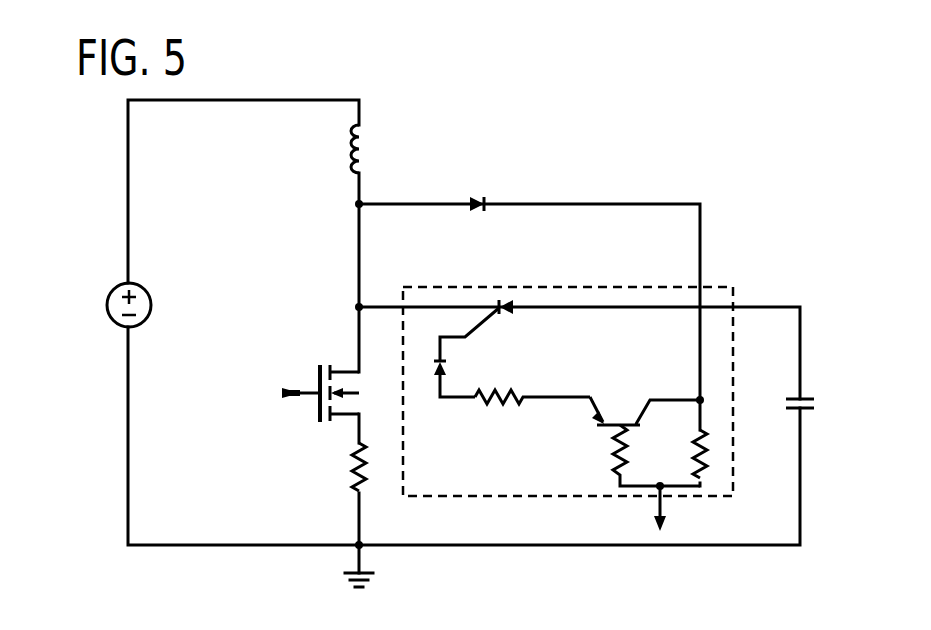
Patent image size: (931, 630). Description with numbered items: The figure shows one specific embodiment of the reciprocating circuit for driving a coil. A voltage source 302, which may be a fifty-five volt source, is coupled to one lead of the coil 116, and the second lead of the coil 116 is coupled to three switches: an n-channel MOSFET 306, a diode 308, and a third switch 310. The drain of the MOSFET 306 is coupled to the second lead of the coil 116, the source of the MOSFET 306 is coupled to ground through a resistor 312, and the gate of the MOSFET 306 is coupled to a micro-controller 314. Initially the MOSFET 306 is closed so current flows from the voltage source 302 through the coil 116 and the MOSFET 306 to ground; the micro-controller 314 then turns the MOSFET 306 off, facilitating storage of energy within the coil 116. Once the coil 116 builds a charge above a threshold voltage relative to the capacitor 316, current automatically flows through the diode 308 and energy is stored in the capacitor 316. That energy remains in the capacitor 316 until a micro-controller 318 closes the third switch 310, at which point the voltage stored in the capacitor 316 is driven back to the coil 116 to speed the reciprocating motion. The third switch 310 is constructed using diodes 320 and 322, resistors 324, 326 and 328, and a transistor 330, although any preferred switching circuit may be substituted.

The coil 116 is at (352, 146).
The voltage source 302 is at (114, 290).
The n-channel MOSFET 306 is at (320, 412).
The diode 308 is at (472, 199).
The third switch 310 is at (718, 286).
The resistor 312 is at (352, 470).
The micro-controller 314 is at (284, 393).
The capacitor 316 is at (804, 398).
The micro-controller 318 is at (655, 520).
The diode 320 is at (503, 297).
The diode 322 is at (447, 363).
The resistor 324 is at (502, 404).
The resistor 326 is at (613, 455).
The resistor 328 is at (706, 462).
The transistor 330 is at (618, 424).